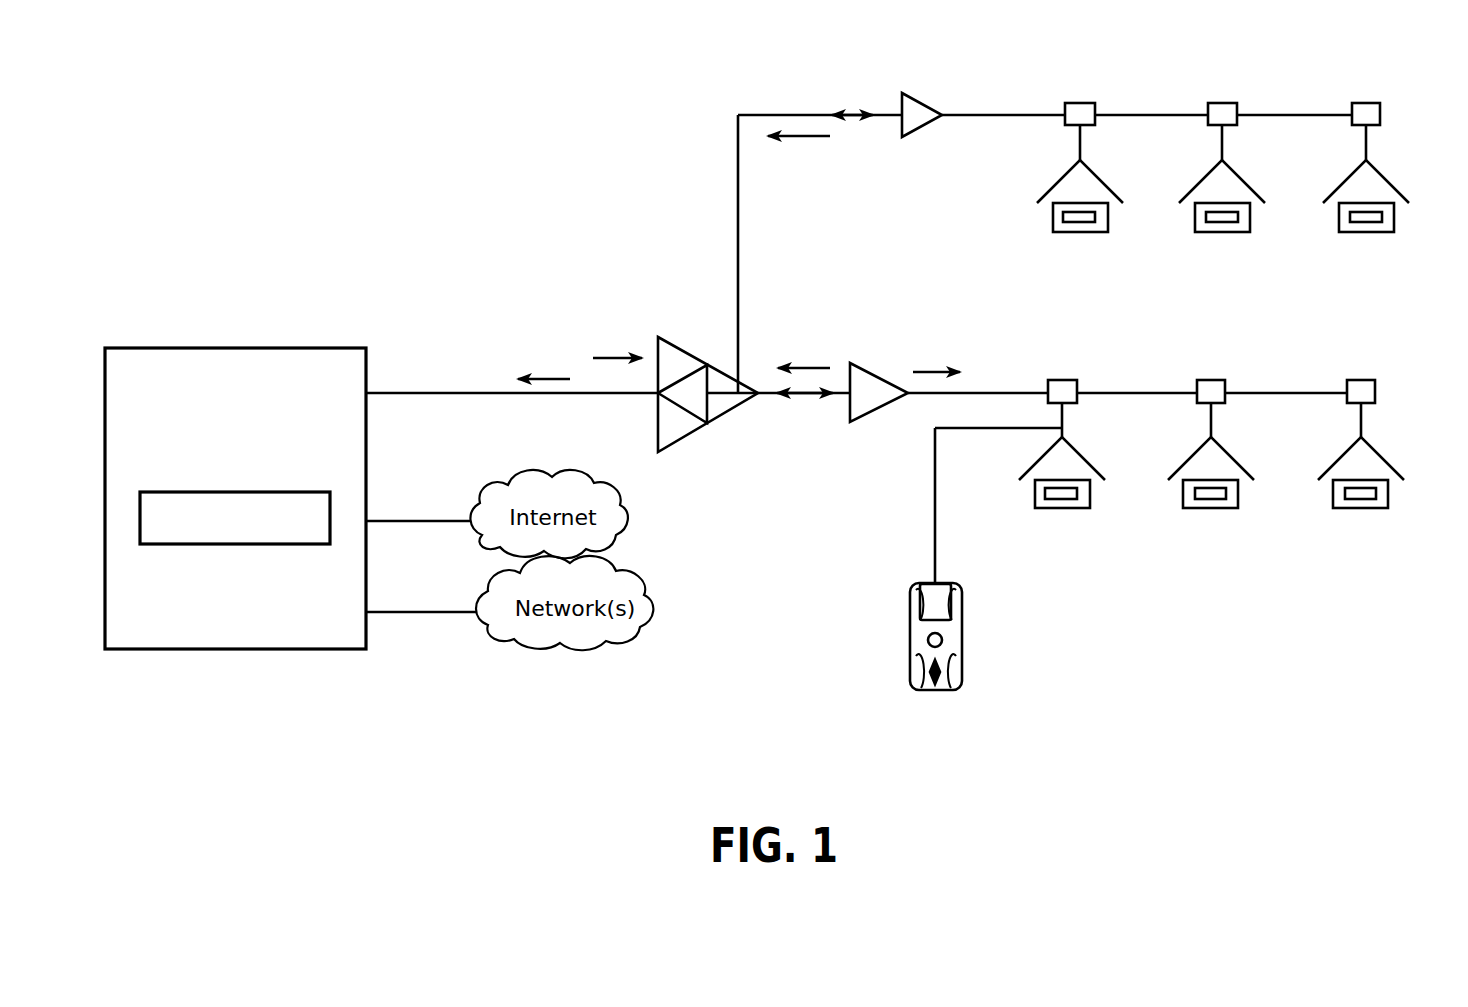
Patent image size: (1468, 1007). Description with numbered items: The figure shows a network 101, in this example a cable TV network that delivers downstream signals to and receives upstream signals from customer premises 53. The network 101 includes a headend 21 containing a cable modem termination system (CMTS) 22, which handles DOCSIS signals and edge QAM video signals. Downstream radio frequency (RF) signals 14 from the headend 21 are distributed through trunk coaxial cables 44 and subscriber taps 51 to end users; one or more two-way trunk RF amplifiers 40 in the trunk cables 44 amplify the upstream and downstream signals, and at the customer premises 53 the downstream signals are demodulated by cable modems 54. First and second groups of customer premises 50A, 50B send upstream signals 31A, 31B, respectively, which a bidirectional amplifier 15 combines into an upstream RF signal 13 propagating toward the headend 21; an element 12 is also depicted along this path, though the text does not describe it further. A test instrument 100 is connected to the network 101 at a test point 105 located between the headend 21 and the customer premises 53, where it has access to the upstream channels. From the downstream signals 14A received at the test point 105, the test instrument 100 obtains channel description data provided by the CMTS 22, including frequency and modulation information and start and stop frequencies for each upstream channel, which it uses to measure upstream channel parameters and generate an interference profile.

The network 101 is at (650, 93).
The headend 21 is at (290, 498).
The CMTS 22 is at (235, 518).
The cable line 12 is at (632, 394).
The downstream direction 13 is at (542, 380).
The upstream direction 14 is at (606, 359).
The splitter 15 is at (666, 338).
The upstream path branch A 31A is at (806, 148).
The upstream path branch B 31B is at (802, 369).
The downstream direction branch 14A is at (926, 373).
The amplifier 40 is at (932, 126).
The coaxial cable 44 is at (1001, 114).
The tap 51 is at (1065, 123).
The subscriber premises 53 is at (1042, 202).
The cable modem 54 is at (1063, 218).
The service group A 50A is at (1156, 237).
The service group B 50B is at (1230, 299).
The test point 105 is at (1050, 380).
The test instrument 100 is at (962, 643).